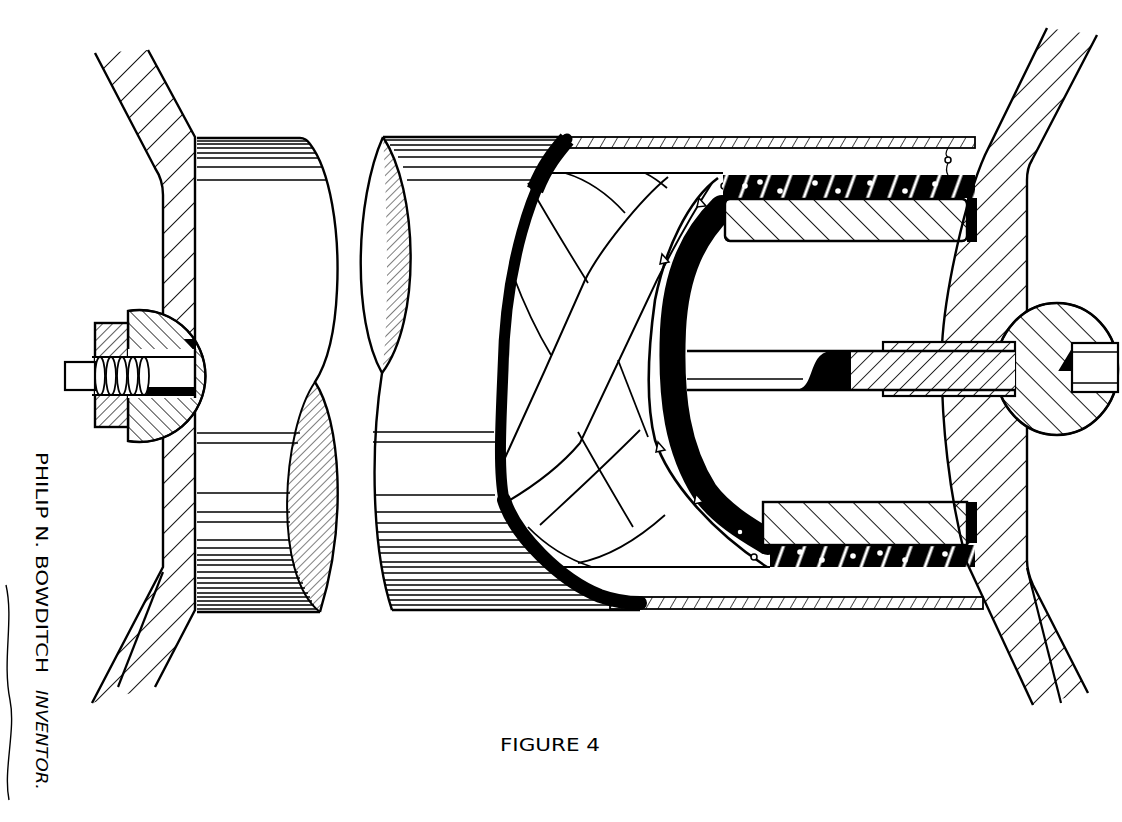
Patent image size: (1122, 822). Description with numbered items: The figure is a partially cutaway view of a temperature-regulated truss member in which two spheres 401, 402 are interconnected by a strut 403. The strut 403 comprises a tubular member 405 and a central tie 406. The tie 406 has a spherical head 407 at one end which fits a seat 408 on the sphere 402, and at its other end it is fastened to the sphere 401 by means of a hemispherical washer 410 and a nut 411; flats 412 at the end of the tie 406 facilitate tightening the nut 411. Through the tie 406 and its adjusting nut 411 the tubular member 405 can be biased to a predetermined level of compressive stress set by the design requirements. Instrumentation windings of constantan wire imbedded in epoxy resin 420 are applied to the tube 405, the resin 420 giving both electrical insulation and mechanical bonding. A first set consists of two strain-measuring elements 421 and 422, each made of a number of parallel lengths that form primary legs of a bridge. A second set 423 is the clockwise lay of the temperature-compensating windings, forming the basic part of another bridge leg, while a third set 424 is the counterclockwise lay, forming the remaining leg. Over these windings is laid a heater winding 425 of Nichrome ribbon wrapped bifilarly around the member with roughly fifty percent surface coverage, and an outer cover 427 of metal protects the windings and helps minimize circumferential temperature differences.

The sphere 401 is at (152, 71).
The sphere 402 is at (1010, 97).
The strut 403 is at (465, 137).
The tubular member 405 is at (840, 502).
The central tie 406 is at (733, 352).
The spherical head 407 is at (1043, 433).
The seat 408 is at (1010, 302).
The hemispherical washer 410 is at (157, 312).
The nut 411 is at (115, 322).
The flats 412 is at (82, 360).
The epoxy resin 420 is at (970, 192).
The strain-measuring element 421 is at (745, 175).
The strain-measuring element 422 is at (853, 557).
The second set of windings 423 is at (748, 175).
The third set of windings 424 is at (838, 175).
The heater winding 425 is at (640, 320).
The outer cover 427 is at (660, 138).